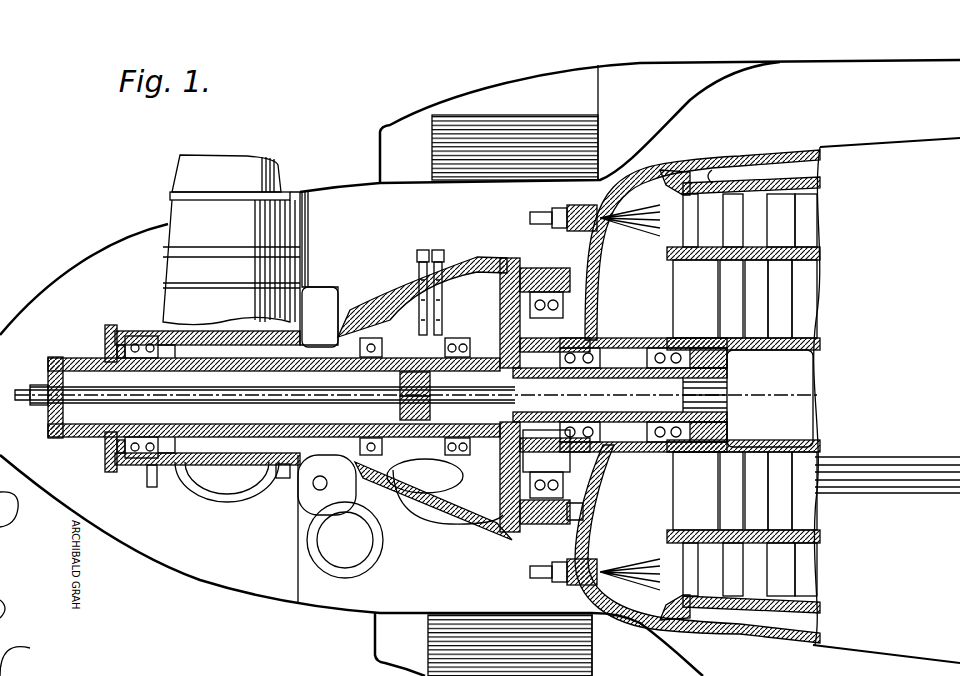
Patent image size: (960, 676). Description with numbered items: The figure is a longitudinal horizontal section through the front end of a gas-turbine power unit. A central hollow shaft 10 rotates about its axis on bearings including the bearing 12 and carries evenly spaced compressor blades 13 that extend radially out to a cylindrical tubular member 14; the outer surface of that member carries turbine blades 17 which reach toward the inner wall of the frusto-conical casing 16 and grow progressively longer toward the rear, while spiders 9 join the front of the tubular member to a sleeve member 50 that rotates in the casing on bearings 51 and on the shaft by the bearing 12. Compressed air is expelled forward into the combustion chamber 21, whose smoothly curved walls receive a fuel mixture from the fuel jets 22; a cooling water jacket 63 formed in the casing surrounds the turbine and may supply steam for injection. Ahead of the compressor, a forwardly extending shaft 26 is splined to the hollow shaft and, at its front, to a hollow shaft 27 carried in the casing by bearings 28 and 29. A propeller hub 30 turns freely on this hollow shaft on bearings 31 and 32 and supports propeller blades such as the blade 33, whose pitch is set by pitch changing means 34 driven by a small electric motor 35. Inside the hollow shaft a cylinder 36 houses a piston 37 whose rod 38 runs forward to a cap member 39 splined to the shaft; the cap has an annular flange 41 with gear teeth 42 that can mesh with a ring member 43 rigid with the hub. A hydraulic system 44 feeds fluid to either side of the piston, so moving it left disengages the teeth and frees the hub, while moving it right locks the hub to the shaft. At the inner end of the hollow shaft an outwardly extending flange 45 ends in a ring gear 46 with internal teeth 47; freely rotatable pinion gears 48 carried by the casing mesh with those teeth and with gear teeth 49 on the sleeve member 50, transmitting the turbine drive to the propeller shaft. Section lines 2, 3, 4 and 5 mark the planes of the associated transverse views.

The section line 2- 2 is at (122, 628).
The section line 3- 3 is at (525, 110).
The section line 4- 4 is at (733, 143).
The section line 5- 5 is at (778, 143).
The spiders 9 is at (690, 518).
The central longitudinal hollow shaft 10 is at (800, 350).
The bearing 12 is at (705, 338).
The compressor blades 13 is at (780, 452).
The cylindrical tubular member 14 is at (645, 542).
The casing 16 is at (822, 180).
The turbine blades 17 is at (756, 220).
The combustion chamber 21 is at (582, 280).
The fuel jets 22 is at (590, 200).
The forwardly extending shaft 26 is at (678, 414).
The hollow shaft 27 is at (248, 470).
The bearing 28 is at (448, 497).
The bearing 29 is at (425, 476).
The propeller hub 30 is at (230, 343).
The bearing 31 is at (163, 465).
The bearing 32 is at (280, 478).
The propeller blade 33 is at (203, 160).
The pitch changing means 34 is at (325, 292).
The electric motor 35 is at (384, 558).
The cylinder 36 is at (398, 378).
The piston 37 is at (398, 408).
The rod 38 is at (282, 392).
The cap member 39 is at (46, 431).
The annular flange 41 is at (107, 331).
The gear teeth 42 is at (118, 325).
The ring member 43 is at (133, 322).
The hydraulic system 44 is at (418, 272).
The flange 45 is at (455, 265).
The ring gear 46 is at (530, 219).
The teeth 47 is at (560, 277).
The pinion gears 48 is at (572, 300).
The gear teeth 49 is at (582, 414).
The sleeve member 50 is at (553, 438).
The bearings 51 is at (655, 338).
The cooling water jacket 63 is at (792, 165).